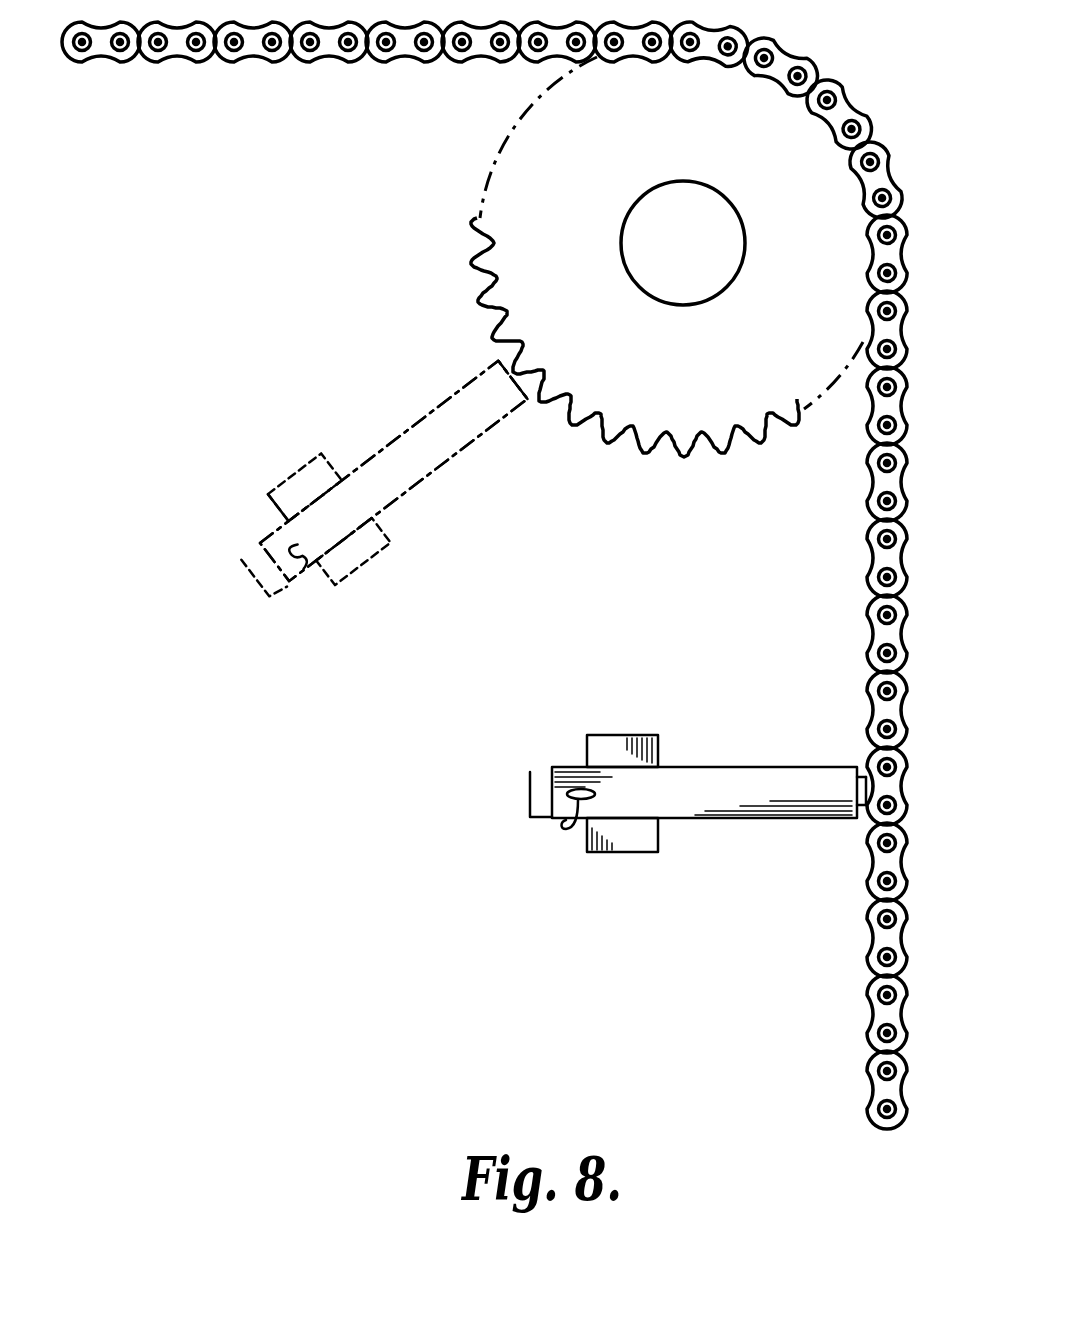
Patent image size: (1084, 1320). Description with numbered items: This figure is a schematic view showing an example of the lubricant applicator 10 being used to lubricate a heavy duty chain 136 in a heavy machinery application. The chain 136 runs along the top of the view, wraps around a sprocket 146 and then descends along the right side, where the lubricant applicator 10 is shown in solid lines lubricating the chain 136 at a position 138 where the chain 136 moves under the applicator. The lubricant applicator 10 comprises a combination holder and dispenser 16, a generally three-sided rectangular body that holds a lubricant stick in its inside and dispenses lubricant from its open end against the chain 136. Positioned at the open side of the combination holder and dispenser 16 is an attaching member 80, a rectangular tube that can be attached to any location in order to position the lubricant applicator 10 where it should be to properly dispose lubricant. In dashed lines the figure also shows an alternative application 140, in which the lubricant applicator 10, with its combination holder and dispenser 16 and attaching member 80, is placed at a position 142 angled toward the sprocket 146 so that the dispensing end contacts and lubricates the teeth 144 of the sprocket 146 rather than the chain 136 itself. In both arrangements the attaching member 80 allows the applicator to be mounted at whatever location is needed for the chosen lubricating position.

The lubricant applicator 10 is at (389, 409).
The combination holder and dispenser 16 is at (440, 468).
The attaching member 80 is at (267, 493).
The heavy duty chain 136 is at (330, 62).
The position 138 is at (860, 765).
The alternative application 140 is at (363, 457).
The position 142 is at (498, 358).
The teeth 144 is at (515, 372).
The sprocket 146 is at (620, 285).